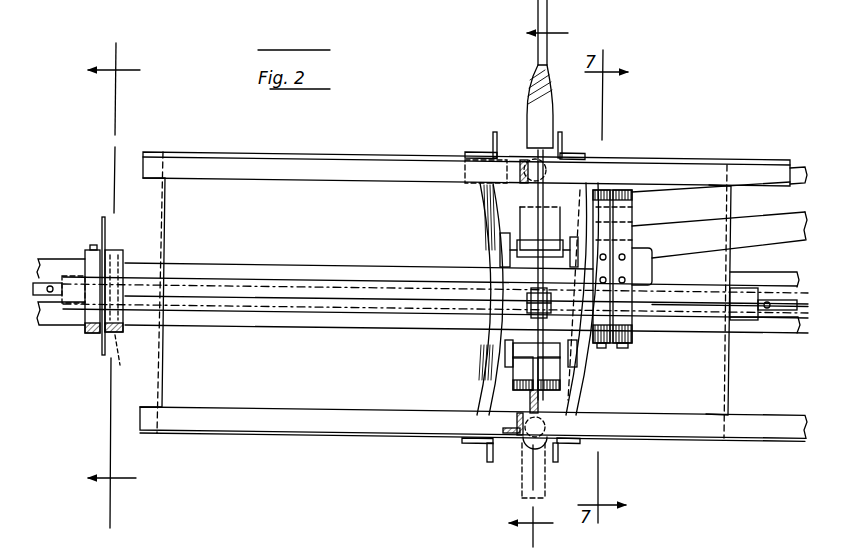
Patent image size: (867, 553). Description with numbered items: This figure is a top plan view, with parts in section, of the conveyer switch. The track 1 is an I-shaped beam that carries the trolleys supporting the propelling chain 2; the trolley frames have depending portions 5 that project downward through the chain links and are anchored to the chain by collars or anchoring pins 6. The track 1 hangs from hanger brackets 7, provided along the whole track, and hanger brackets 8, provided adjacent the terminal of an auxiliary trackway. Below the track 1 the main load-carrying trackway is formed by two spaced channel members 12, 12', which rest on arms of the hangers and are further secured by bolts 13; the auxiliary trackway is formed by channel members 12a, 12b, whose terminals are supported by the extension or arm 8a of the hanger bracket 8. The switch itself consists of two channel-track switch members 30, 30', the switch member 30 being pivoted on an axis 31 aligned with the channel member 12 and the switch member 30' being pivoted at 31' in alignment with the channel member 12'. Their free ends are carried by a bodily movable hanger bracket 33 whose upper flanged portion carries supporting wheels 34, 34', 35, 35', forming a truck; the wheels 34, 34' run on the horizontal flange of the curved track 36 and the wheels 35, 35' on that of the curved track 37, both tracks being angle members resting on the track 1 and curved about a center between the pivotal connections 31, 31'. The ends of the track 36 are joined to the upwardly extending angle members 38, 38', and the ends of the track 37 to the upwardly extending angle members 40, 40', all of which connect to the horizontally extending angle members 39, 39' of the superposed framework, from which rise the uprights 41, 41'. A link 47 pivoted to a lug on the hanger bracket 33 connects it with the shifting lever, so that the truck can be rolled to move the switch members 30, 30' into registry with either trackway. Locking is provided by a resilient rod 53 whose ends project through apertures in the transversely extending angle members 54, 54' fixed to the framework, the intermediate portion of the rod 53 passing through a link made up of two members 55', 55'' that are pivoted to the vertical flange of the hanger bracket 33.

The track 1 is at (207, 278).
The propelling chain 2 is at (58, 308).
The depending portions 5 is at (538, 280).
The collars or anchoring pins 6 is at (114, 285).
The hanger bracket 7 is at (102, 220).
The hanger bracket 8 is at (622, 323).
The extension or arm 8a is at (610, 205).
The channel member 12 is at (426, 258).
The channel member 12' is at (425, 340).
The channel member 12a is at (790, 232).
The channel member 12b is at (798, 180).
The bolts 13 is at (92, 337).
The switch member 30 is at (435, 263).
The switch member 30' is at (435, 329).
The axis 31 is at (122, 273).
The pivot 31' is at (128, 358).
The hanger bracket 33 is at (524, 219).
The supporting wheel 34 is at (641, 236).
The supporting wheel 34' is at (580, 381).
The supporting wheel 35 is at (510, 242).
The supporting wheel 35' is at (507, 358).
The track 36 is at (577, 393).
The track 37 is at (493, 393).
The upwardly extending angle member 38 is at (572, 461).
The upwardly extending angle member 38' is at (577, 128).
The horizontally extending angle member 39 is at (473, 435).
The horizontally extending angle member 39' is at (466, 153).
The upwardly extending angle member 40 is at (474, 461).
The upwardly extending angle member 40' is at (486, 142).
The upright 41 is at (501, 466).
The upright 41' is at (509, 139).
The link 47 is at (537, 55).
The resilient rod 53 is at (377, 302).
The transversely extending angle member 54 is at (177, 292).
The transversely extending angle member 54' is at (737, 301).
The link member 55' is at (483, 275).
The link member 55'' is at (497, 350).